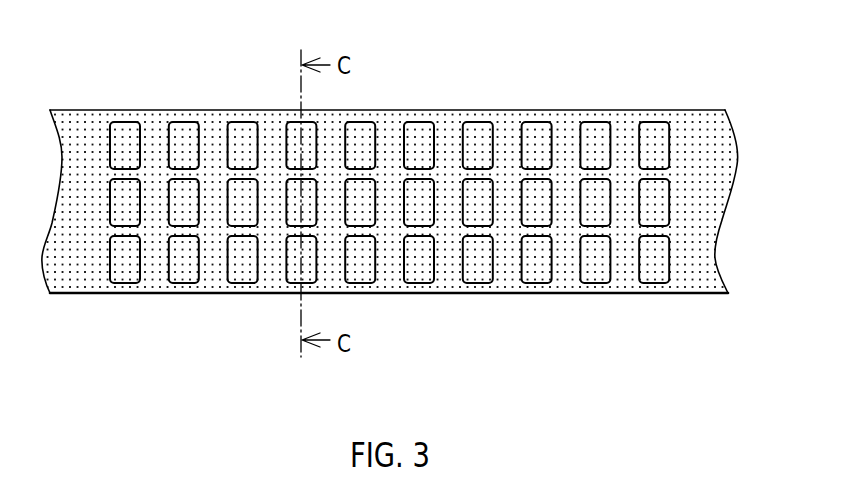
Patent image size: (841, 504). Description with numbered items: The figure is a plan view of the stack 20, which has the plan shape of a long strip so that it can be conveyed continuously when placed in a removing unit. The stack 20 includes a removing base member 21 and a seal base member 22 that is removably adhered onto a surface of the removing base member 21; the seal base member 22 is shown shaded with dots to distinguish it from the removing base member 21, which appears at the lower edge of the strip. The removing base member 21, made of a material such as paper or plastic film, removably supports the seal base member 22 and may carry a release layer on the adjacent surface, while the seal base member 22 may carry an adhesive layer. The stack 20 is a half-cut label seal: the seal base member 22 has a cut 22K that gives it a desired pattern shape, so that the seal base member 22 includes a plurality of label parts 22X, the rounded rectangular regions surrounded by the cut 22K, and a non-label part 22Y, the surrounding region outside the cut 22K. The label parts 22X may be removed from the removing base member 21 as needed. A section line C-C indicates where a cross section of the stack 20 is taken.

The stack 20 is at (482, 78).
The removing base member 21 is at (79, 281).
The seal base member 22 is at (455, 368).
The cut 22K is at (183, 283).
The label part 22X is at (477, 265).
The non-label part 22Y is at (622, 265).